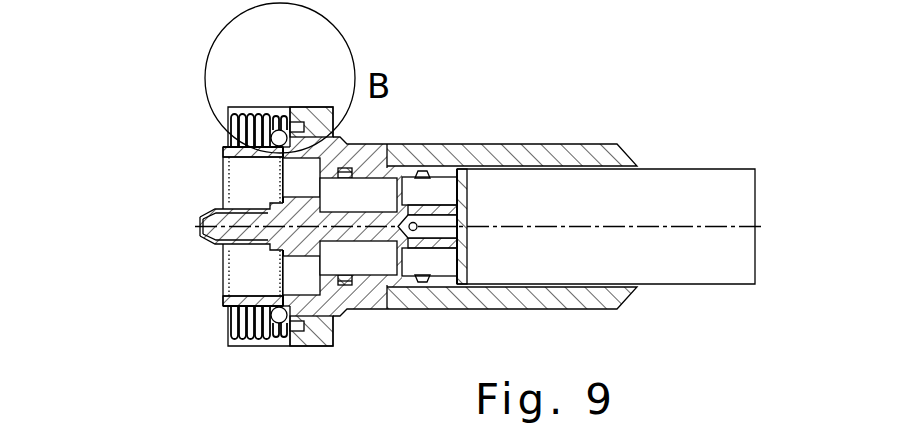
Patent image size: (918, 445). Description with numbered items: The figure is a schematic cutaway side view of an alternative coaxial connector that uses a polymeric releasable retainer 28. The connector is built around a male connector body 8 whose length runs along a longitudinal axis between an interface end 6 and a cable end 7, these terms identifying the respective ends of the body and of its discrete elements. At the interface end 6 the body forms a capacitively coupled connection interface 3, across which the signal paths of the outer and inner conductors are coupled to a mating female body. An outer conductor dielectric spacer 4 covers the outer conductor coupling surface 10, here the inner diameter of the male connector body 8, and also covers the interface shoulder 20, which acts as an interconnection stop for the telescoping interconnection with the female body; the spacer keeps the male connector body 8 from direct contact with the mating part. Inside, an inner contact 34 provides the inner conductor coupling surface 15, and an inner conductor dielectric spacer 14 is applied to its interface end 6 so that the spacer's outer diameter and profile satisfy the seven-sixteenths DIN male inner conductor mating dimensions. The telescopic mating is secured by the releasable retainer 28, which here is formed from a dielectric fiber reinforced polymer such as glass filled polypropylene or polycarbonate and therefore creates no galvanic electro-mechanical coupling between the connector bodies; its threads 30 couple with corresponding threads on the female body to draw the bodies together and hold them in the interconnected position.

The connection interface 3 is at (170, 218).
The outer conductor dielectric spacer 4 is at (240, 270).
The interface end 6 is at (155, 236).
The cable end 7 is at (773, 234).
The male connector body 8 is at (370, 157).
The outer conductor coupling surface 10 is at (225, 300).
The inner conductor dielectric spacer 14 is at (257, 207).
The inner conductor coupling surface 15 is at (225, 205).
The interface shoulder 20 is at (314, 336).
The releasable retainer 28 is at (300, 343).
The threads 30 is at (257, 327).
The inner contact 34 is at (398, 227).